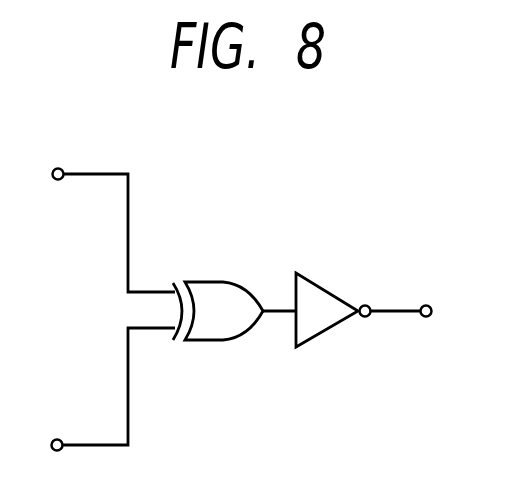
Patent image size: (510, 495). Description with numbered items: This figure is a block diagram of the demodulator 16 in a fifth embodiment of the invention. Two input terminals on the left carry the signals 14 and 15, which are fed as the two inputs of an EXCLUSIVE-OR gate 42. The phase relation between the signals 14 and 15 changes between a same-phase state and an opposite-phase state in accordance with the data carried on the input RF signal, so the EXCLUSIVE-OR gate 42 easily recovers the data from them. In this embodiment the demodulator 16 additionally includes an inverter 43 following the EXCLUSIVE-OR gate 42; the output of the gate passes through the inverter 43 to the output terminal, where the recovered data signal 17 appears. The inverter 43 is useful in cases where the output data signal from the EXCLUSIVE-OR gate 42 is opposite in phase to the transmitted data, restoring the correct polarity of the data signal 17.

The signal 14 is at (90, 445).
The signal 15 is at (78, 174).
The demodulator 16 is at (238, 229).
The data signal 17 is at (403, 308).
The EXCLUSIVE-OR gate 42 is at (220, 341).
The inverter 43 is at (337, 326).